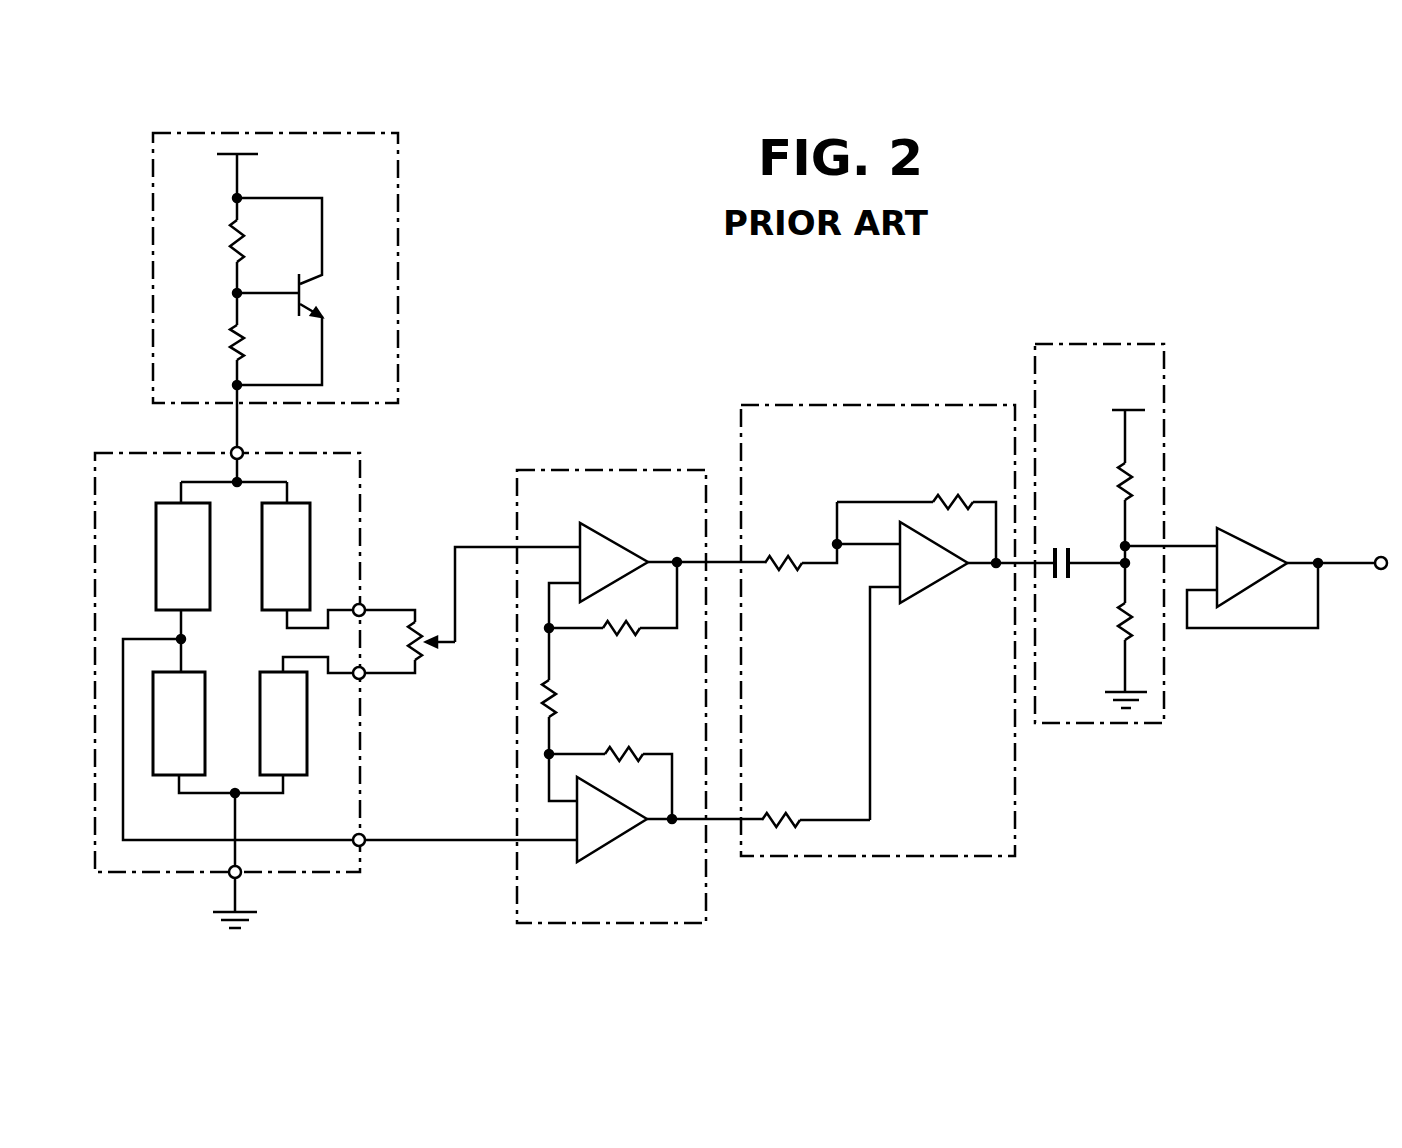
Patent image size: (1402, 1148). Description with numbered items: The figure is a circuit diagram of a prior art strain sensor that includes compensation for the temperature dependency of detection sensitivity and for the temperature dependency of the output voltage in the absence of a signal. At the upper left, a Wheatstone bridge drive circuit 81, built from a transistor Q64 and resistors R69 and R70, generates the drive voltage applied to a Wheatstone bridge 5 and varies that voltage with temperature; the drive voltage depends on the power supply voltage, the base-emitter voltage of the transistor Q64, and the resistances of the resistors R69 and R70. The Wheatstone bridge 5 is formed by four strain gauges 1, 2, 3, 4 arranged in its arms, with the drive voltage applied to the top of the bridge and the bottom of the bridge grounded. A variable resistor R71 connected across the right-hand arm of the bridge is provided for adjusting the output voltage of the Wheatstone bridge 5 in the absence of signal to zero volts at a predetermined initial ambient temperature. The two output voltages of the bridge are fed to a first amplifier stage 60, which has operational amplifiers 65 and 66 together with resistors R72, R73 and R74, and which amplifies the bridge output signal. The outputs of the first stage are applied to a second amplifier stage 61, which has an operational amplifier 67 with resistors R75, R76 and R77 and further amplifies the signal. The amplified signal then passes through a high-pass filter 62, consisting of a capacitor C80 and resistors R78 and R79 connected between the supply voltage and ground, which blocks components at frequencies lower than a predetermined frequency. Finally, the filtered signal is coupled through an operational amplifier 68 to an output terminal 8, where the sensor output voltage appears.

The Wheatstone bridge drive circuit 81 is at (176, 132).
The resistor R69 is at (270, 244).
The resistor R70 is at (220, 345).
The transistor Q64 is at (312, 292).
The Wheatstone bridge 5 is at (110, 450).
The strain gauge 1 is at (156, 530).
The strain gauge 2 is at (160, 776).
The strain gauge 3 is at (310, 535).
The strain gauge 4 is at (307, 768).
The variable resistor R71 is at (426, 660).
The first amplifier stage 60 is at (576, 468).
The operational amplifier 65 is at (625, 548).
The operational amplifier 66 is at (625, 846).
The resistor R72 is at (556, 700).
The resistor R73 is at (626, 638).
The resistor R74 is at (612, 752).
The second amplifier stage 61 is at (812, 403).
The resistor R75 is at (782, 548).
The resistor R76 is at (782, 812).
The resistor R77 is at (950, 490).
The operational amplifier 67 is at (940, 598).
The high-pass filter 62 is at (1056, 343).
The resistor R78 is at (1117, 476).
The resistor R79 is at (1108, 622).
The capacitor C80 is at (1078, 556).
The operational amplifier 68 is at (1240, 540).
The output terminal 8 is at (1381, 569).